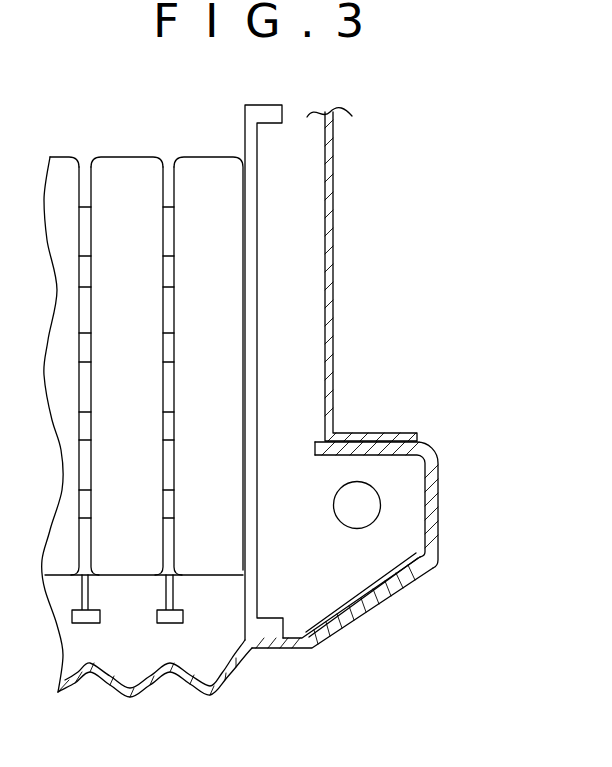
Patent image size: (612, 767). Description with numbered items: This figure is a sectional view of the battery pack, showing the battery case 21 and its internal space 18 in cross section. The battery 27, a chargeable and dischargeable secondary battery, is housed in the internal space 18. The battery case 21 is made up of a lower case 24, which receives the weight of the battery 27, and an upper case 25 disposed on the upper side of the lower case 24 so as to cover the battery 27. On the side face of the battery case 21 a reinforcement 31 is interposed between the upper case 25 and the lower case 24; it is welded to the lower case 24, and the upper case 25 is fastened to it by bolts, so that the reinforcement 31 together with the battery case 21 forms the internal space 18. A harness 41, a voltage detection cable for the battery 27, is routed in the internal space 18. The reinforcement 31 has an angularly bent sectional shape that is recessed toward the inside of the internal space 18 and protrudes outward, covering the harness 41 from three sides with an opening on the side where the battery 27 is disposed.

The battery case 21 is at (382, 195).
The battery 27 is at (128, 155).
The internal space 18 is at (297, 272).
The upper case 25 is at (333, 320).
The reinforcement 31 is at (437, 472).
The harness 41 is at (382, 505).
The lower case 24 is at (273, 650).